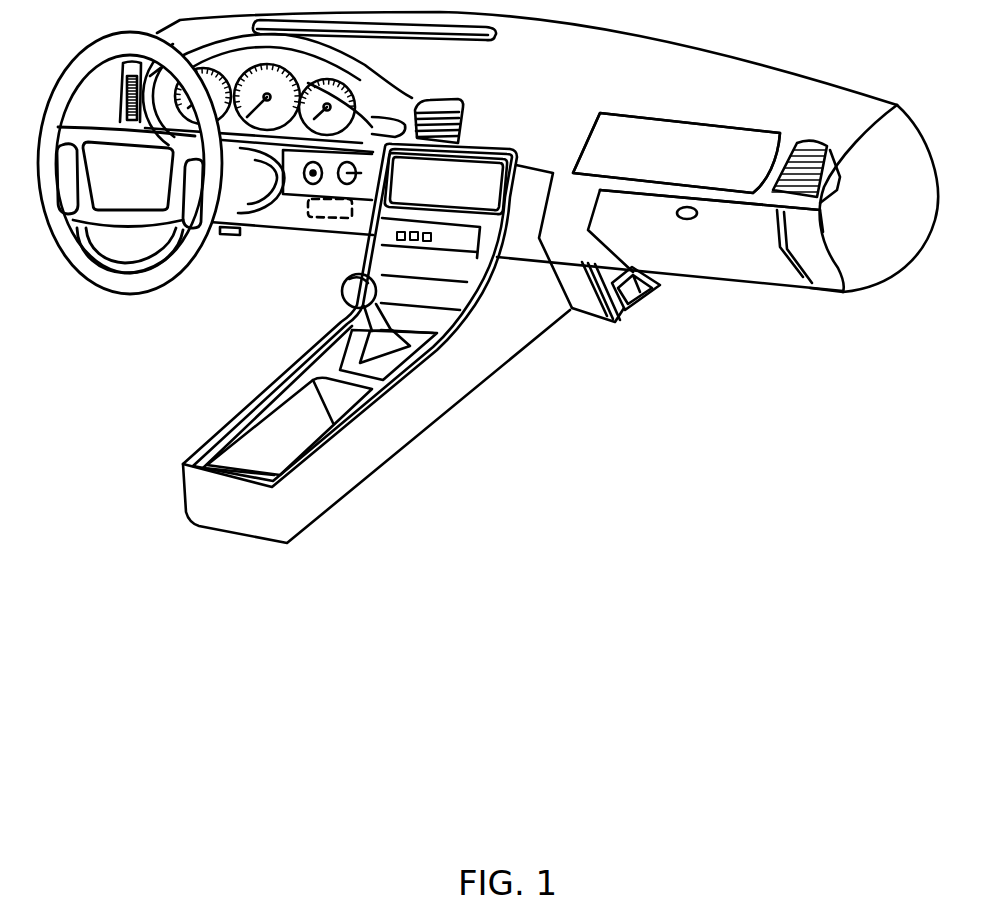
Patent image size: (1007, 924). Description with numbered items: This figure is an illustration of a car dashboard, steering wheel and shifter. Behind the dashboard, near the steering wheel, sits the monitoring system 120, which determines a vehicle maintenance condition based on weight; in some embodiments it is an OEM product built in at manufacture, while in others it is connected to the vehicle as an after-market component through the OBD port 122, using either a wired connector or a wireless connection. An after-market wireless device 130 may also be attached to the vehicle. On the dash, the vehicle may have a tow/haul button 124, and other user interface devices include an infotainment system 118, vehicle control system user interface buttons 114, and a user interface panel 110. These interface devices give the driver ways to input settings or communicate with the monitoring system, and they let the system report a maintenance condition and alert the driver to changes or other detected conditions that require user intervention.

The user interface panel 110 is at (385, 177).
The vehicle control system user interface buttons 114 is at (398, 238).
The infotainment system 118 is at (457, 267).
The monitoring system 120 is at (308, 212).
The OBD port 122 is at (222, 235).
The tow/haul button 124 is at (498, 171).
The after-market wireless device 130 is at (647, 295).